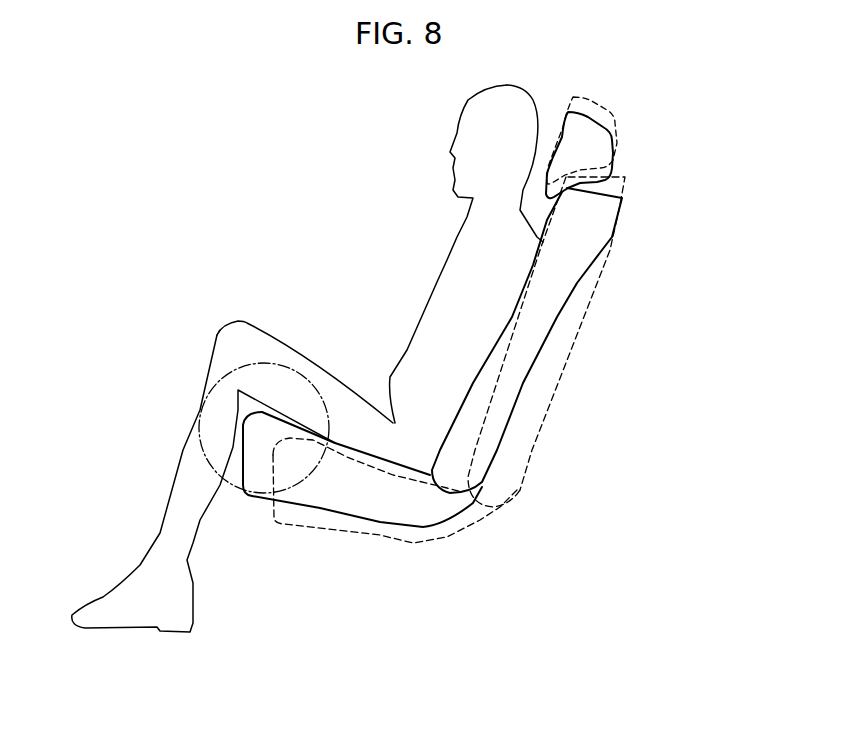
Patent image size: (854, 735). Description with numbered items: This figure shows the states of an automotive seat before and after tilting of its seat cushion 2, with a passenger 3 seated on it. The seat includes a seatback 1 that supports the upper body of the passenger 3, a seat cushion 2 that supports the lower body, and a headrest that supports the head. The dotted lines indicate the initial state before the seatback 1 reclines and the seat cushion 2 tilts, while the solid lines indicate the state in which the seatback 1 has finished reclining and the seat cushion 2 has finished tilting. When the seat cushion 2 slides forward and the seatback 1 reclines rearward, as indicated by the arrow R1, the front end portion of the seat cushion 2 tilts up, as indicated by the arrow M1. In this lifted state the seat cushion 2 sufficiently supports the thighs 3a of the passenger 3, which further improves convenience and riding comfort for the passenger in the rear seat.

The seatback 1 is at (523, 393).
The seat cushion 2 is at (380, 522).
The passenger 3 is at (598, 117).
The thighs 3a is at (243, 340).
The arrow indicating rearward reclining of the seatback R1 is at (490, 317).
The arrow indicating tilting up of the seat cushion front end portion M1 is at (255, 423).